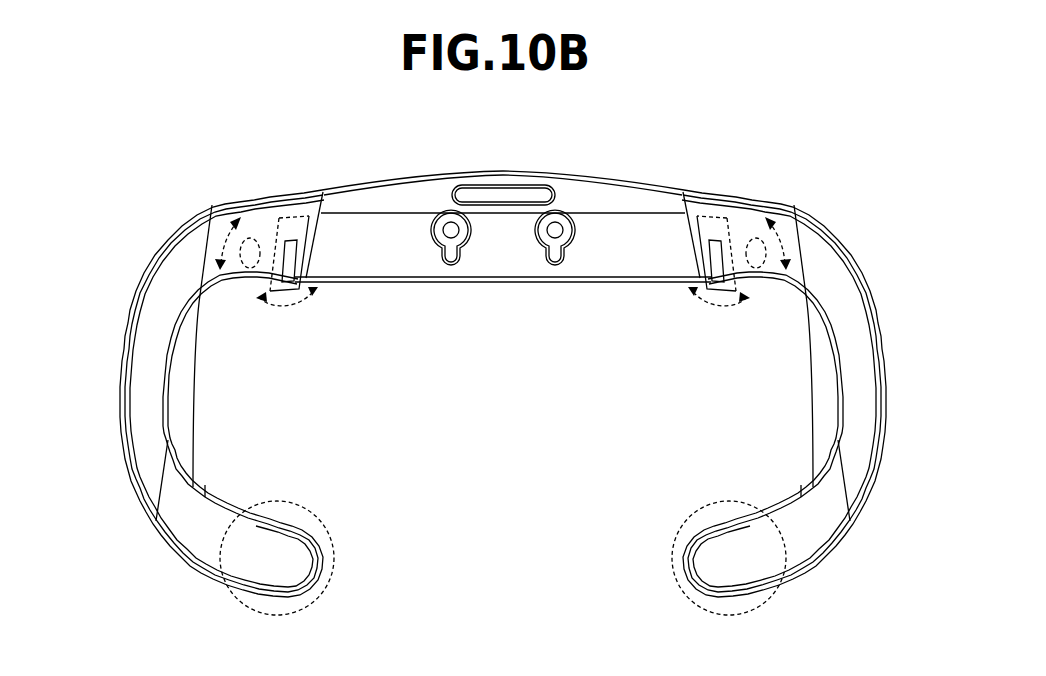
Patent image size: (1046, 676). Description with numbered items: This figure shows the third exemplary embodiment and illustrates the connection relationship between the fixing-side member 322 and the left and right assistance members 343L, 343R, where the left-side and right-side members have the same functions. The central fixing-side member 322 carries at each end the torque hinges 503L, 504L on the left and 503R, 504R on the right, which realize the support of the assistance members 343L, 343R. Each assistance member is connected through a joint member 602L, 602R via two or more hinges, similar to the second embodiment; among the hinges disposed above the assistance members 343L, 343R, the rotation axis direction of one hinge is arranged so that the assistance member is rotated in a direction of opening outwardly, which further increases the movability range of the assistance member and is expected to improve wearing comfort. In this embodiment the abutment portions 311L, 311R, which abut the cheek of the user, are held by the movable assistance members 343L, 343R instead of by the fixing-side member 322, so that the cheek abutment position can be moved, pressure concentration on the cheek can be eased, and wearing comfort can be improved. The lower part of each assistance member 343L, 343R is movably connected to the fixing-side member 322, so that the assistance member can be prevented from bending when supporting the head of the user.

The fixing-side member 322 is at (492, 284).
The assistance member (left) 343L is at (128, 487).
The assistance member (right) 343R is at (878, 490).
The abutment portion (left) 311L is at (368, 490).
The abutment portion (right) 311R is at (674, 517).
The torque hinge (left) 503L is at (249, 238).
The torque hinge (right) 503R is at (757, 238).
The torque hinge (left) 504L is at (299, 197).
The torque hinge (right) 504R is at (708, 198).
The joint member (left) 602L is at (248, 292).
The joint member (right) 602R is at (757, 292).